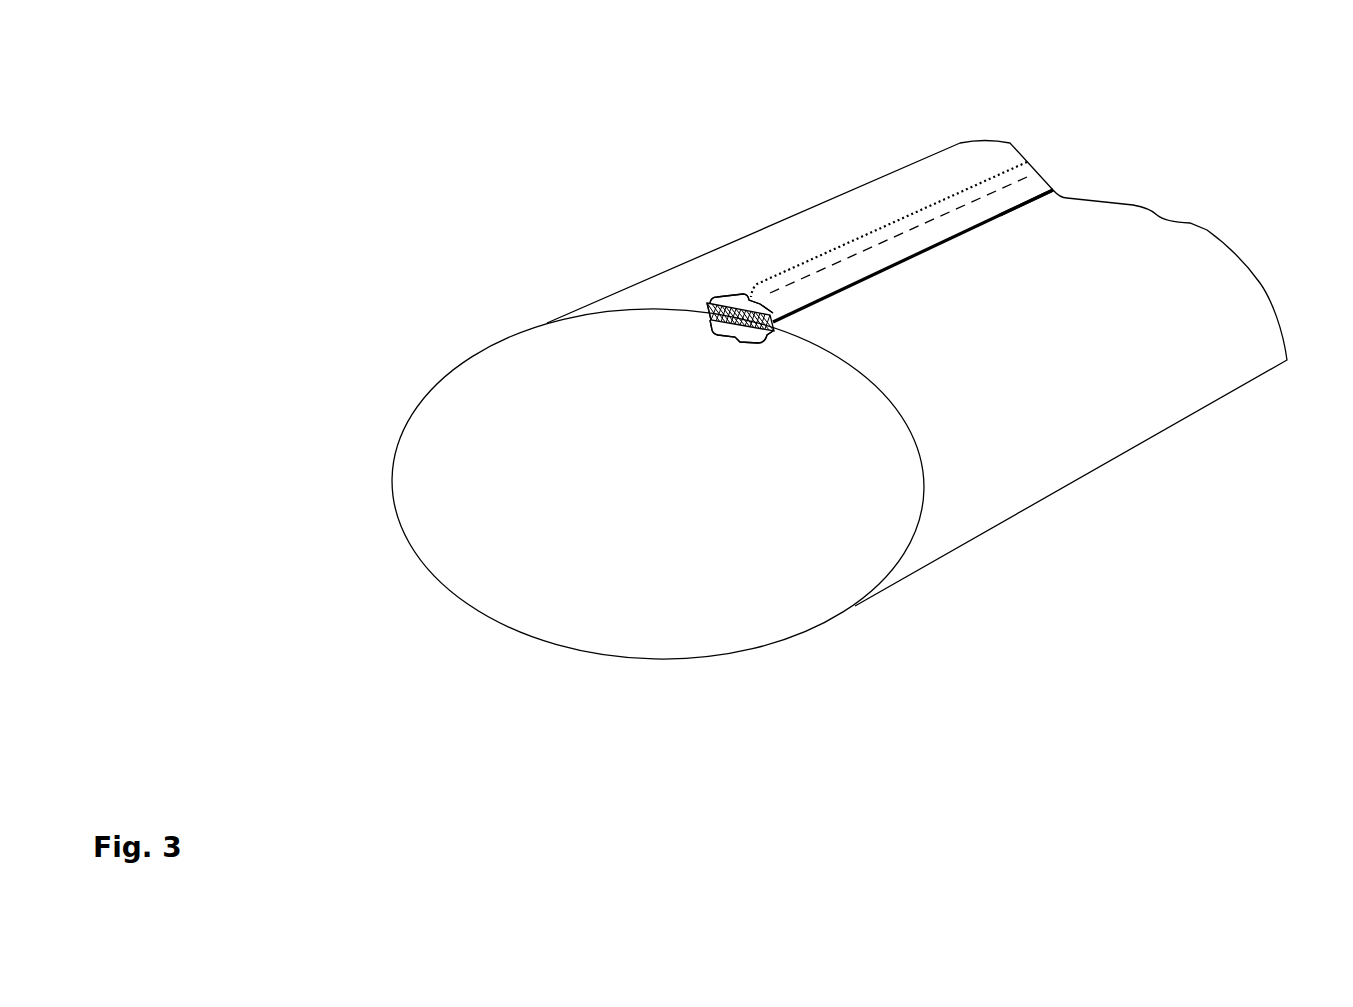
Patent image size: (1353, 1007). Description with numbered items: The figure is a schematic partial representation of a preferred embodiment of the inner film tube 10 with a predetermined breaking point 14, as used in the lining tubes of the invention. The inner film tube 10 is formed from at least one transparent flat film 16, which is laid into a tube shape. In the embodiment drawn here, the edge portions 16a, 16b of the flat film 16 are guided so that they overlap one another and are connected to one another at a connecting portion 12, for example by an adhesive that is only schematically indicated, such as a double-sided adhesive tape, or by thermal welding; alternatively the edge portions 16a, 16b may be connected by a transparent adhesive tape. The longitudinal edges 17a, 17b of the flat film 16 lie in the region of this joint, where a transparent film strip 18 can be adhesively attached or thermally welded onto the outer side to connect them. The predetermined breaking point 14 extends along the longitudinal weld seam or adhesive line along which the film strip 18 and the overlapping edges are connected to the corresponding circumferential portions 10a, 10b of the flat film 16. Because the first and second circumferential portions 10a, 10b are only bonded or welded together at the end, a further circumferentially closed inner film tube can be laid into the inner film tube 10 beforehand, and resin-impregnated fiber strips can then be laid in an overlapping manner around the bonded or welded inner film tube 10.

The inner film tube 10 is at (1068, 323).
The first circumferential portion of the inner film tube 10a is at (750, 297).
The second circumferential portion of the inner film tube 10b is at (737, 342).
The connecting portion 12 is at (1032, 186).
The predetermined breaking point 14 is at (900, 237).
The flat film formed into a tube 16 is at (620, 620).
The edge portion 16a is at (750, 297).
The edge portion 16b is at (740, 530).
The longitudinal edge 17a is at (712, 312).
The longitudinal edge 17b is at (967, 230).
The welded-on film strip 18 is at (722, 285).